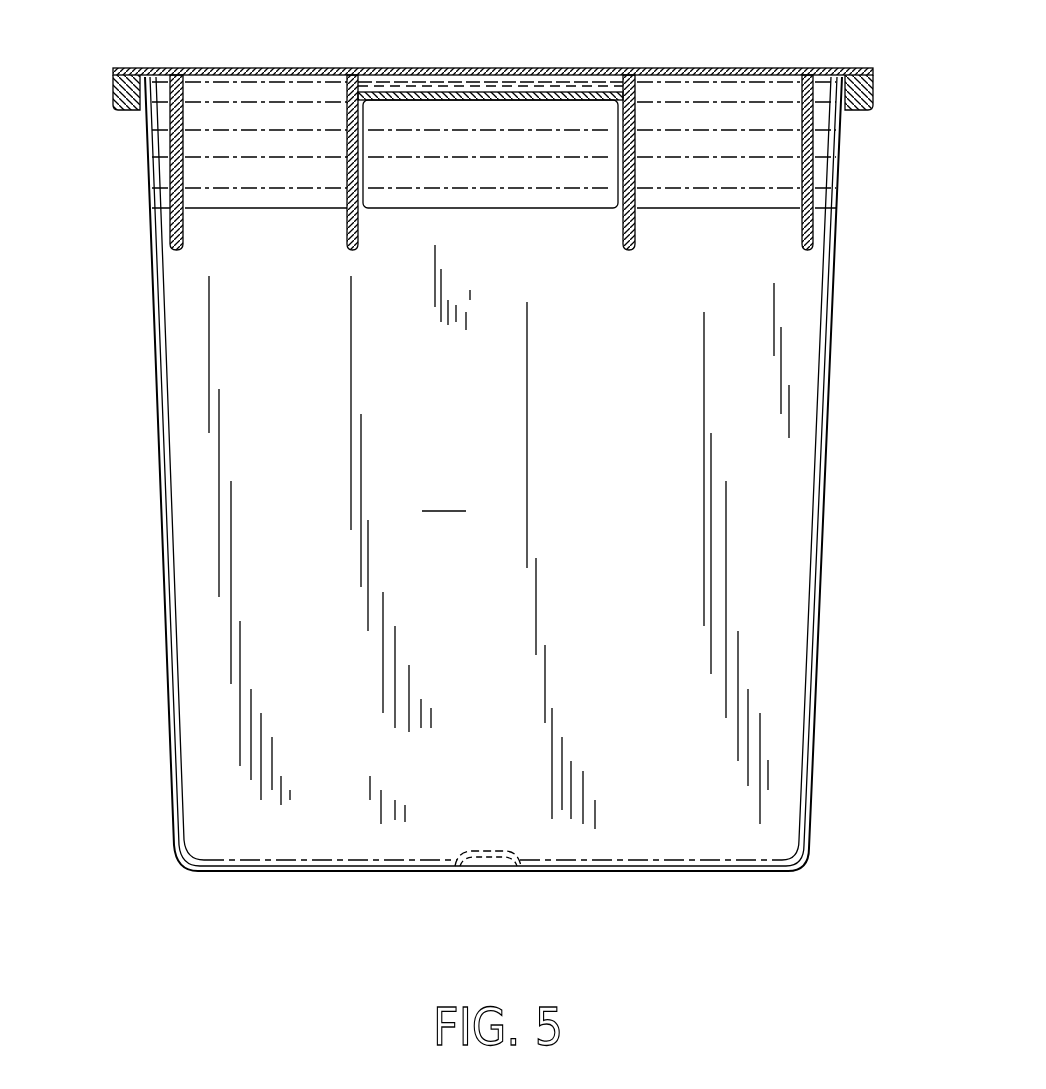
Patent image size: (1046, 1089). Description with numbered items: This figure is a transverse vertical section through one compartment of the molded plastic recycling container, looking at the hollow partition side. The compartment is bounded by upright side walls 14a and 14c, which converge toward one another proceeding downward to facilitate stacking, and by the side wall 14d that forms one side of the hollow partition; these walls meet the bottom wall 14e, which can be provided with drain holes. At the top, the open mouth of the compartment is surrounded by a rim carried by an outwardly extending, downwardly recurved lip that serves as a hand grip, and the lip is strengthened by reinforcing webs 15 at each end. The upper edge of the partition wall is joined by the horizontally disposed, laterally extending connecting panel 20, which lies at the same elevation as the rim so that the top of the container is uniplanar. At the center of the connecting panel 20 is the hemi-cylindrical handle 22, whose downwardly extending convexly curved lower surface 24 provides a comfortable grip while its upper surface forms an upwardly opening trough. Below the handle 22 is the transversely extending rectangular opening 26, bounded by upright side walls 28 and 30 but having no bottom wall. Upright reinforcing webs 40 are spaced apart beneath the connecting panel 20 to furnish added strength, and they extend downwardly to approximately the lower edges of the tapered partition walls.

The side wall 14a is at (160, 516).
The side wall 14c is at (818, 602).
The side wall 14d is at (499, 537).
The bottom wall 14e is at (633, 872).
The reinforcing web 15 is at (124, 110).
The connecting panel 20 is at (256, 68).
The handle 22 is at (494, 68).
The convexly curved lower surface 24 is at (466, 100).
The rectangular opening 26 is at (618, 152).
The upright side wall of opening 28 is at (347, 160).
The upright side wall of opening 30 is at (635, 175).
The reinforcing web 40 is at (183, 132).